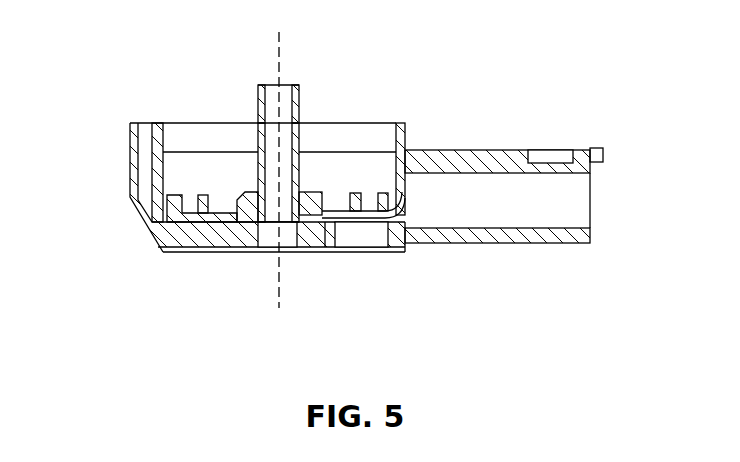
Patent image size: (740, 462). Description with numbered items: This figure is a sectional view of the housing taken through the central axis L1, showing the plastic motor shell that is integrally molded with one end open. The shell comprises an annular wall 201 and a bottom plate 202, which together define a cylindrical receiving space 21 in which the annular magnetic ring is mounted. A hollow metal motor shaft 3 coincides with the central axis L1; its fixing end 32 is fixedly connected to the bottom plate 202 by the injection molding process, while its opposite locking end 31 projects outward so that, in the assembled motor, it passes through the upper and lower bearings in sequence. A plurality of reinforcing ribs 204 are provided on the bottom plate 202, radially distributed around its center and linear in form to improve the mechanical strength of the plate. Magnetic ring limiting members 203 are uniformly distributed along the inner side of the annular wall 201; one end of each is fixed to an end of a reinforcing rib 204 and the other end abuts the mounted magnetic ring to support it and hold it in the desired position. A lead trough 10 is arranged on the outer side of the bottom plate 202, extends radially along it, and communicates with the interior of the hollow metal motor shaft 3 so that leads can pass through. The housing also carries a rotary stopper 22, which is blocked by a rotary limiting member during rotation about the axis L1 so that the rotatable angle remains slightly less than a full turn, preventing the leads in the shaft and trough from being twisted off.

The rotary stopper 22 is at (130, 163).
The bottom plate 202 is at (212, 238).
The lead trough 10 is at (350, 233).
The receiving space 21 is at (240, 167).
The magnetic ring limiting member 203 is at (202, 217).
The reinforcing rib 204 is at (220, 218).
The locking end 31 is at (300, 90).
The hollow metal motor shaft 3 is at (302, 147).
The central axis L1 is at (284, 156).
The fixing end 32 is at (313, 225).
The annular wall 201 is at (405, 133).